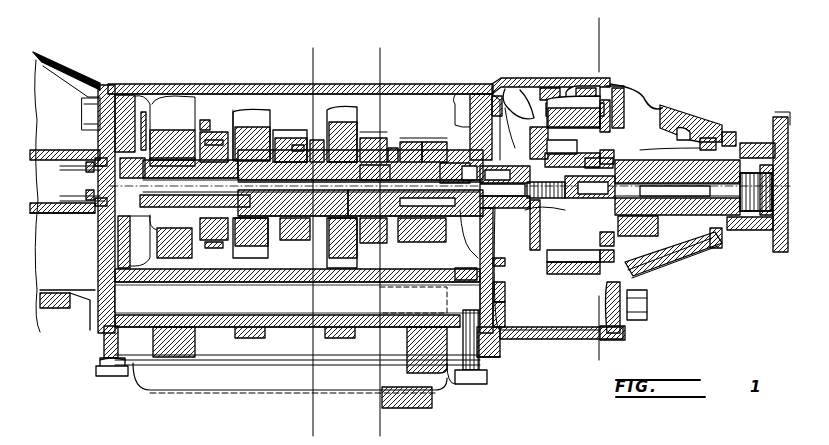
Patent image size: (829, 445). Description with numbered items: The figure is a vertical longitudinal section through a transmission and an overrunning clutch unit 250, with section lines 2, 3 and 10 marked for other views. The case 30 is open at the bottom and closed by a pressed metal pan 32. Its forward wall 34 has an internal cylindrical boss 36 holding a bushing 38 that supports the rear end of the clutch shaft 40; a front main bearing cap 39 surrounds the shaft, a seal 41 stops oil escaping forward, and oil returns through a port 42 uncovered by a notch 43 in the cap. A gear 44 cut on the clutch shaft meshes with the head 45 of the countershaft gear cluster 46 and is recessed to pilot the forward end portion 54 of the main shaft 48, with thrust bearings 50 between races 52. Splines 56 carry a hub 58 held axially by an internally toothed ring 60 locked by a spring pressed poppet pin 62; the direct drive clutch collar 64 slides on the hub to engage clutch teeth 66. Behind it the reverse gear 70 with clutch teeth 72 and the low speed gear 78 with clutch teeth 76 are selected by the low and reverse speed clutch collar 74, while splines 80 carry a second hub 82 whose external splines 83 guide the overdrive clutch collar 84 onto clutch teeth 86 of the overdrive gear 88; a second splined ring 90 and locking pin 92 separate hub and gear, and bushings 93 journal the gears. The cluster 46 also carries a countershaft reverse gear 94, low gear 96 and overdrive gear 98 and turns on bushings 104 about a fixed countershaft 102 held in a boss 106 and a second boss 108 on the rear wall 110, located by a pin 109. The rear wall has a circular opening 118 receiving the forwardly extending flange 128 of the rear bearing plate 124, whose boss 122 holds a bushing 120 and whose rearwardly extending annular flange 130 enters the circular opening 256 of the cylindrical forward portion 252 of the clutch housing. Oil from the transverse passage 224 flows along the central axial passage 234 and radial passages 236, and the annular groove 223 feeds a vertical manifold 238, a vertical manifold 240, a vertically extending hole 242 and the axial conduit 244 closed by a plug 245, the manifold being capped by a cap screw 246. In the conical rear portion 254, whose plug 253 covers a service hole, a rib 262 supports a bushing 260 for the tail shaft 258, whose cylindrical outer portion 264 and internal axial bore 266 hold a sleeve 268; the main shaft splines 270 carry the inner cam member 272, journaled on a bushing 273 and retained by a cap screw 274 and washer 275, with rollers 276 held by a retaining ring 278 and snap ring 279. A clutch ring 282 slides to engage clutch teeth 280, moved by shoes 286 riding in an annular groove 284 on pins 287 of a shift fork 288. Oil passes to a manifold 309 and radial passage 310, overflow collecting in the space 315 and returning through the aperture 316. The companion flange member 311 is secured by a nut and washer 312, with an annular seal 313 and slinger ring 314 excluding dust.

The section line 2- 2 is at (294, 435).
The section line 3- 3 is at (366, 435).
The section line 10- 10 is at (589, 355).
The case 30 is at (232, 86).
The pressed metal pan 32 is at (196, 390).
The forward wall 34 is at (112, 95).
The internal cylindrical boss 36 is at (137, 120).
The bushing 38 is at (146, 148).
The front main bearing cap 39 is at (52, 153).
The clutch shaft 40 is at (55, 212).
The seal 41 is at (92, 152).
The port 42 is at (118, 232).
The notch 43 is at (67, 284).
The gear 44 is at (178, 130).
The head 45 is at (198, 340).
The countershaft gear cluster 46 is at (303, 348).
The main shaft 48 is at (308, 176).
The thrust bearings 50 is at (118, 181).
The races 52 is at (118, 190).
The forward end portion 54 is at (175, 148).
The splines 56 is at (145, 168).
The hub 58 is at (178, 166).
The internally toothed ring 60 is at (204, 138).
The spring pressed poppet pin 62 is at (180, 208).
The direct drive clutch collar 64 is at (212, 238).
The clutch teeth 66 is at (200, 130).
The reverse gear 70 is at (258, 140).
The clutch teeth 72 is at (280, 140).
The low and reverse speed clutch collar 74 is at (298, 145).
The clutch teeth 76 is at (318, 140).
The low speed gear 78 is at (350, 135).
The splines 80 is at (362, 172).
The second hub 82 is at (390, 148).
The external splines 83 is at (370, 140).
The overdrive clutch collar 84 is at (362, 245).
The clutch teeth 86 is at (404, 142).
The overdrive gear 88 is at (432, 142).
The second splined ring 90 is at (445, 180).
The spring pressed locking pin 92 is at (386, 238).
The bushings 93 is at (306, 240).
The countershaft reverse gear 94 is at (258, 332).
The countershaft low gear 96 is at (340, 336).
The countershaft overdrive gear 98 is at (408, 350).
The countershaft 102 is at (262, 306).
The bushings 104 is at (395, 290).
The boss 106 is at (96, 332).
The second boss 108 is at (500, 340).
The pin 109 is at (500, 355).
The rear wall 110 is at (482, 372).
The circular opening 118 is at (474, 94).
The bushing 120 is at (525, 160).
The boss 122 is at (492, 258).
The rear bearing plate 124 is at (492, 84).
The forwardly extending flange 128 is at (455, 95).
The rearwardly extending annular flange 130 is at (540, 82).
The annular groove 223 is at (506, 196).
The transverse passage 224 is at (466, 176).
The central axial passage 234 is at (415, 203).
The radial passages 236 is at (335, 203).
The vertical manifold 238 is at (500, 265).
The vertical manifold 240 is at (500, 276).
The vertically extending hole 242 is at (508, 292).
The axial conduit 244 is at (447, 300).
The plug 245 is at (506, 312).
The cap screw 246 is at (472, 384).
The overrunning clutch unit 250 is at (706, 87).
The cylindrical forward portion 252 is at (622, 88).
The plug 253 is at (640, 318).
The conical rear portion 254 is at (652, 272).
The circular opening 256 is at (526, 95).
The tail shaft 258 is at (740, 192).
The bushing 260 is at (660, 240).
The rib 262 is at (660, 120).
The cylindrical outer portion 264 is at (604, 134).
The internal axial bore 266 is at (618, 208).
The sleeve 268 is at (590, 188).
The splines 270 is at (518, 225).
The inner cam member 272 is at (505, 176).
The bushing 273 is at (613, 243).
The cap screw 274 is at (593, 157).
The washer 275 is at (522, 202).
The rollers 276 is at (572, 131).
The retaining ring 278 is at (606, 150).
The snap ring 279 is at (613, 259).
The clutch teeth 280 is at (538, 130).
The clutch ring 282 is at (578, 88).
The annular groove 284 is at (585, 270).
The shoes 286 is at (628, 100).
The pins 287 is at (615, 82).
The shift fork 288 is at (606, 78).
The manifold 309 is at (665, 198).
The radial passage 310 is at (660, 172).
The companion flange member 311 is at (765, 250).
The nut and washer 312 is at (774, 204).
The annular seal 313 is at (714, 132).
The slinger ring 314 is at (738, 146).
The space 315 is at (698, 250).
The aperture 316 is at (670, 260).